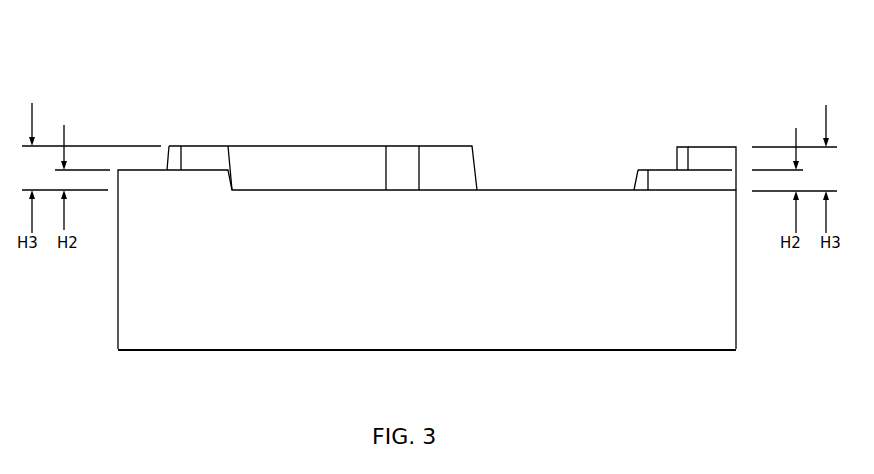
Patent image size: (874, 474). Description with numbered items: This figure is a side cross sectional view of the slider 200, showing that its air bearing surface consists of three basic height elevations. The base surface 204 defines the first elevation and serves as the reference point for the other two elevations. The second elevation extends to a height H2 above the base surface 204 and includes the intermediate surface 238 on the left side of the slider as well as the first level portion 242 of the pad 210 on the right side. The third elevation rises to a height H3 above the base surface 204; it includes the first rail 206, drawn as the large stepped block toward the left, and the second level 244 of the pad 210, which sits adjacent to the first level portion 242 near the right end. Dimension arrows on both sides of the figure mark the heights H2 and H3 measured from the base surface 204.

The substrate assembly 200 is at (532, 78).
The base surface 204 is at (502, 183).
The first rail 206 is at (348, 146).
The pad 210 is at (683, 139).
The intermediate surface 238 is at (143, 170).
The first level portion 242 is at (658, 170).
The second level 244 is at (706, 147).